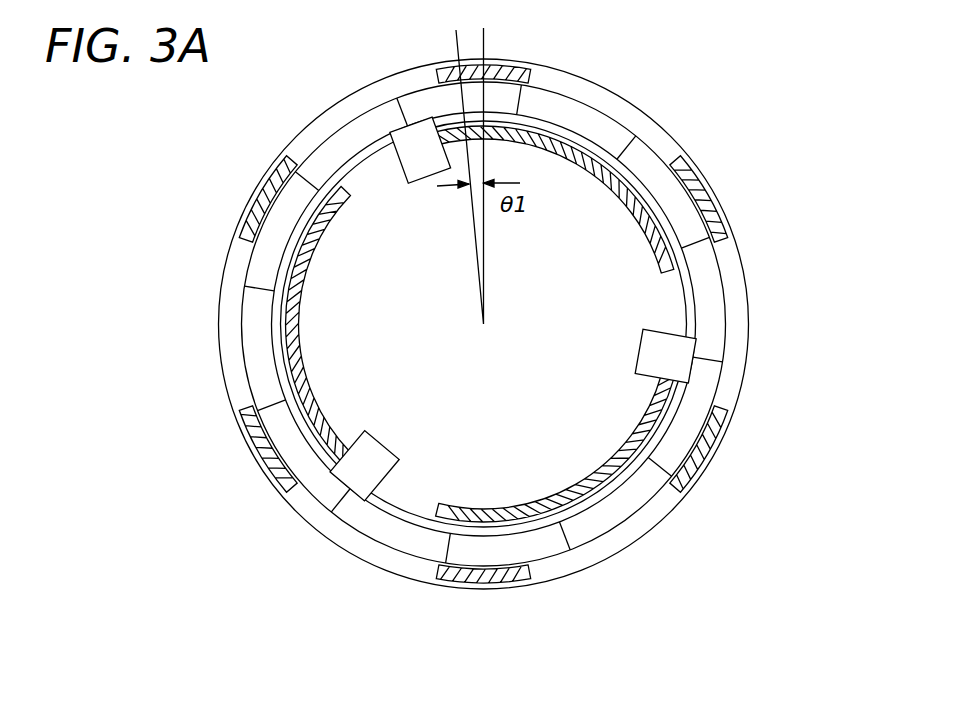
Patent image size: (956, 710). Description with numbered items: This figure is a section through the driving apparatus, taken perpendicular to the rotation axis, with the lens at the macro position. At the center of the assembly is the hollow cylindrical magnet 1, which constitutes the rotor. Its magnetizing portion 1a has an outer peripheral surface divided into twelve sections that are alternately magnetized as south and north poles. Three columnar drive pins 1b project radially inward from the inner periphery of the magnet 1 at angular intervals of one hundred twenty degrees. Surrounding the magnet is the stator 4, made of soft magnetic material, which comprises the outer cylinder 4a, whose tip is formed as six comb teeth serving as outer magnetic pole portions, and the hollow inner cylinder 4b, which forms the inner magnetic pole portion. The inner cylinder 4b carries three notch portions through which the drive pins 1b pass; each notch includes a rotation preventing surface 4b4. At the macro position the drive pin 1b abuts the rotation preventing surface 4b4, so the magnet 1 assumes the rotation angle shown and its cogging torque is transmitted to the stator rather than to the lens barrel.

The magnet 1 is at (616, 100).
The magnetizing portion 1a is at (253, 312).
The drive pins 1b is at (408, 148).
The stator 4 is at (677, 267).
The outer cylinder 4a is at (268, 445).
The inner cylinder 4b is at (325, 432).
The rotation preventing surface 4b4 is at (440, 127).